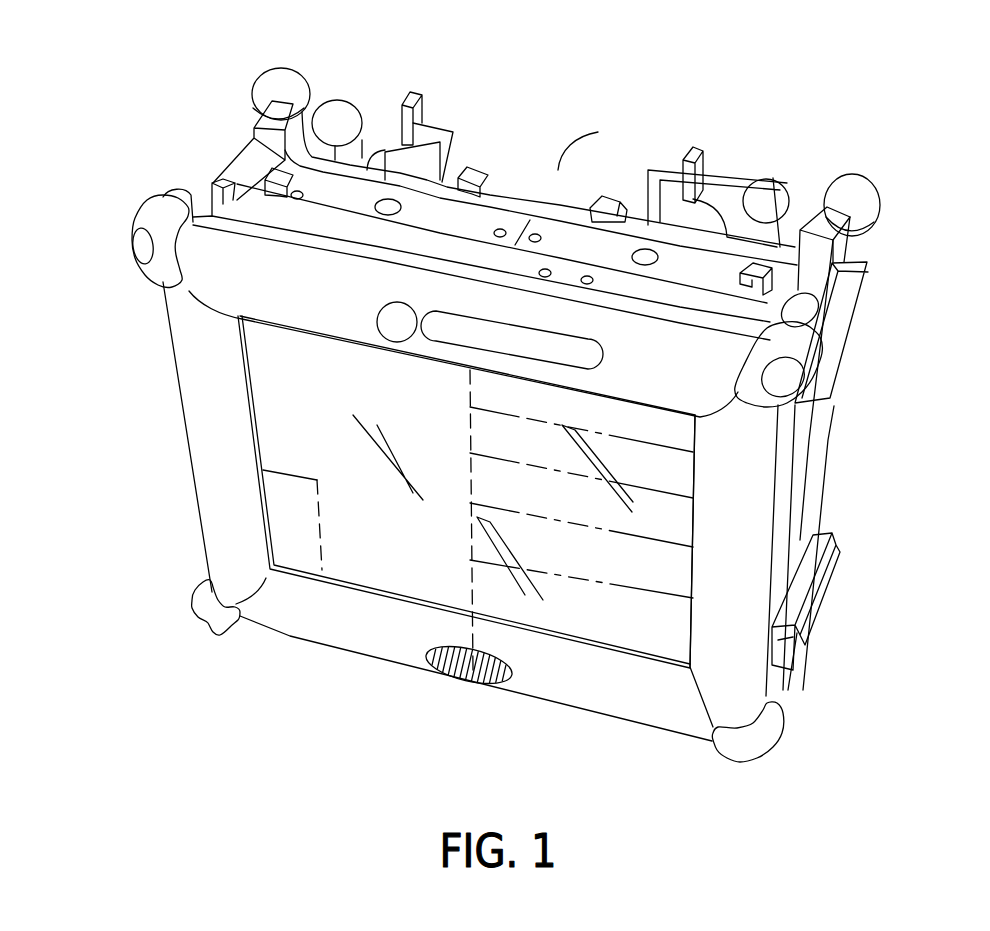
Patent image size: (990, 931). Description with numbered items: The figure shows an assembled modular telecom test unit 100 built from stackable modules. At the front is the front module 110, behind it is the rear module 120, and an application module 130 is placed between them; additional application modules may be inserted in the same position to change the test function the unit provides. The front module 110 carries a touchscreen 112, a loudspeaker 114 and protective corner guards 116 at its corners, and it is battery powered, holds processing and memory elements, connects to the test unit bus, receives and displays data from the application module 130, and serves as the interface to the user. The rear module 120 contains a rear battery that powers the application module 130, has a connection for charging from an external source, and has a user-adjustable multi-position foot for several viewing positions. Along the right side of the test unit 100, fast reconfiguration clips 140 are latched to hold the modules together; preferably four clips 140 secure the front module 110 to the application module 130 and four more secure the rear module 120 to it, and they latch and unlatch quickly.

The modular test unit 100 is at (834, 89).
The front module 110 is at (750, 510).
The touchscreen 112 is at (375, 545).
The loudspeaker 114 is at (465, 672).
The protective corner guards 116 is at (283, 76).
The rear module 120 is at (552, 208).
The application module 130 is at (812, 457).
The fast reconfiguration clips 140 is at (850, 317).